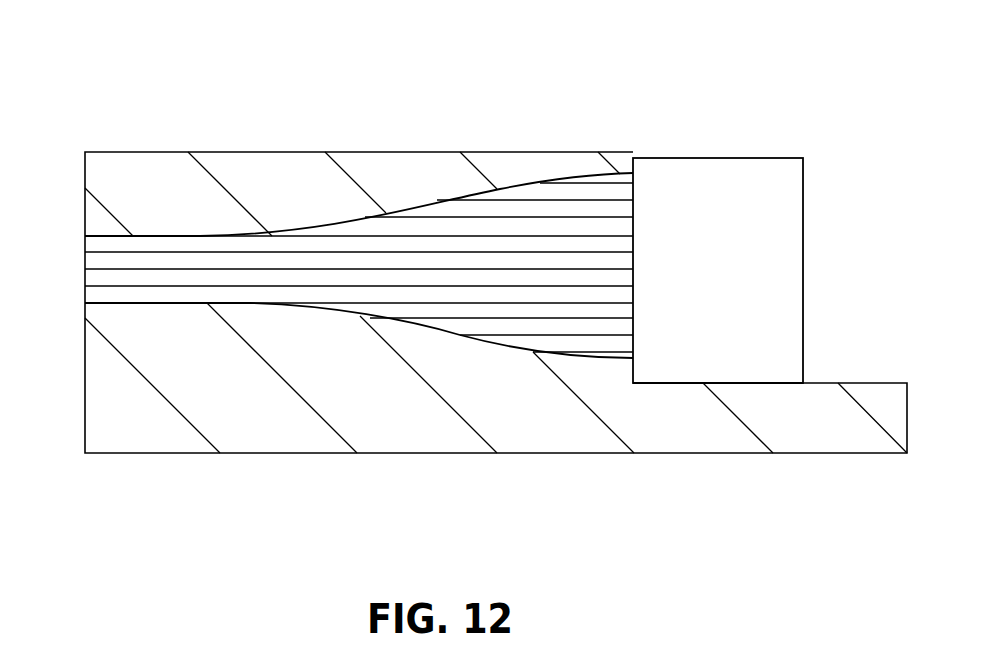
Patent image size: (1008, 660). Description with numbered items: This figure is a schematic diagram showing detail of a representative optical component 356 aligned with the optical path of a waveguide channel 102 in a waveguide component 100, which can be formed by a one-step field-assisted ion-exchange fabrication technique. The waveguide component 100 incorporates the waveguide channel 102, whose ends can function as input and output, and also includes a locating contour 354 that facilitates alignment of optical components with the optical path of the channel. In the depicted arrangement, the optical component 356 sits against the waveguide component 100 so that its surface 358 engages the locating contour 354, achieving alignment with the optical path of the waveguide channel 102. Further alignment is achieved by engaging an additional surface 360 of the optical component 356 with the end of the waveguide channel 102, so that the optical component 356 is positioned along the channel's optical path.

The waveguide component 100 is at (152, 118).
The waveguide channel 102 is at (427, 235).
The surface 360 is at (632, 250).
The optical component 356 is at (715, 158).
The locating contour 354 is at (820, 383).
The surface 358 is at (753, 383).